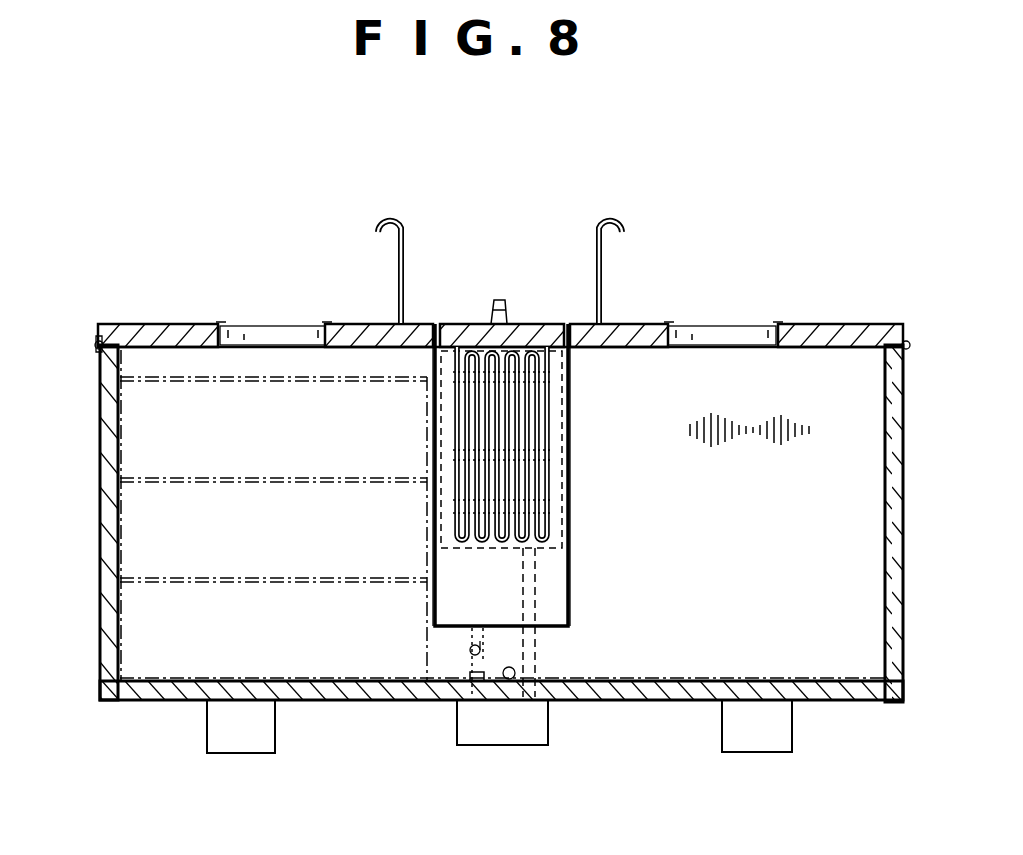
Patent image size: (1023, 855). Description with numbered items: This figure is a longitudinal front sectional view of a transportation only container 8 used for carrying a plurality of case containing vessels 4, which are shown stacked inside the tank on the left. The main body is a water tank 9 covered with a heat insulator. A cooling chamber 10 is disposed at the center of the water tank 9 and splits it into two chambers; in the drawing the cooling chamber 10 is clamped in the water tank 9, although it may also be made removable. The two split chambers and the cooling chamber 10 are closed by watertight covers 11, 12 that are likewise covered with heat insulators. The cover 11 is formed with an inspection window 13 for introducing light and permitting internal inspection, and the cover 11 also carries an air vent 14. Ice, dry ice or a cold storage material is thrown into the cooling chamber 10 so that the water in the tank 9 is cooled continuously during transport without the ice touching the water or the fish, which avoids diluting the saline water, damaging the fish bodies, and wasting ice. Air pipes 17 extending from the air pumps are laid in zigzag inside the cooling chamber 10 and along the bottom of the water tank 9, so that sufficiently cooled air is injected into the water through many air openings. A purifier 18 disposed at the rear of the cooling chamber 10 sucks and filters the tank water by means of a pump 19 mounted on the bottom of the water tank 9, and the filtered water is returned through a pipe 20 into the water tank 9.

The case containing vessel 4 is at (135, 436).
The transportation only container 8 is at (912, 318).
The water tank 9 is at (900, 518).
The cooling chamber 10 is at (572, 583).
The watertight cover 11 is at (168, 325).
The watertight cover 12 is at (537, 325).
The inspection window 13 is at (268, 325).
The air vent 14 is at (386, 212).
The air pipe 17 is at (548, 488).
The purifier 18 is at (565, 433).
The pump 19 is at (505, 737).
The pipe 20 is at (475, 675).